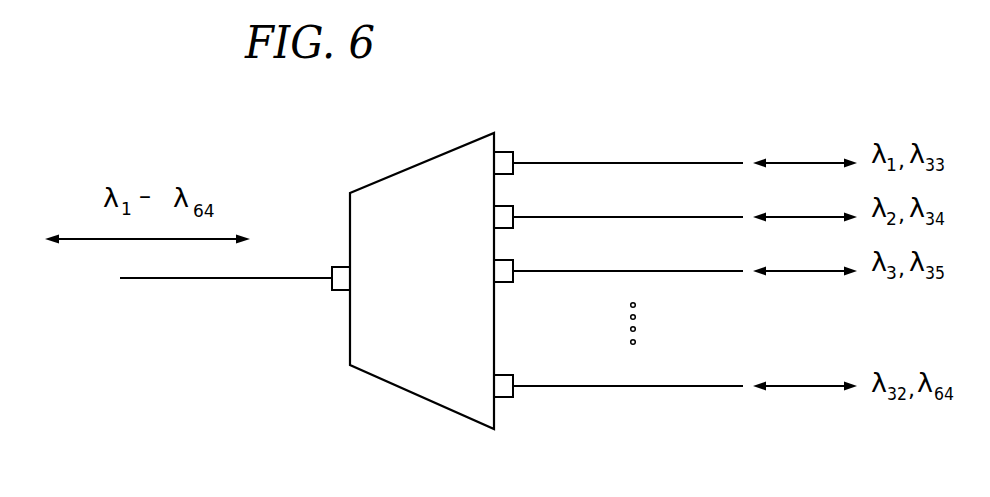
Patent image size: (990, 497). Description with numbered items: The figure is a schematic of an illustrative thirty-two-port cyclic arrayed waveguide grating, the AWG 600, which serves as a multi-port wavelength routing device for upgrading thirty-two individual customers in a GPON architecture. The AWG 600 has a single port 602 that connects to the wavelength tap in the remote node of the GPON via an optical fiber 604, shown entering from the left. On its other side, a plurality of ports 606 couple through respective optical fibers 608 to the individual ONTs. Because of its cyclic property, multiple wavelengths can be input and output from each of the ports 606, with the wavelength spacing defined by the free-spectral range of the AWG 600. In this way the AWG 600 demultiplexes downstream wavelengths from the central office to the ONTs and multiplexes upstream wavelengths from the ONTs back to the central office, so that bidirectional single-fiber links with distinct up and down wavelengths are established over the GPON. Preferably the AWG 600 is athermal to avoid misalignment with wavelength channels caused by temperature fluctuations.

The cyclic arrayed waveguide grating (AWG) 600 is at (413, 166).
The single port 602 is at (328, 288).
The optical fiber 604 is at (145, 281).
The ports 606 is at (517, 152).
The optical fibers 608 is at (668, 163).